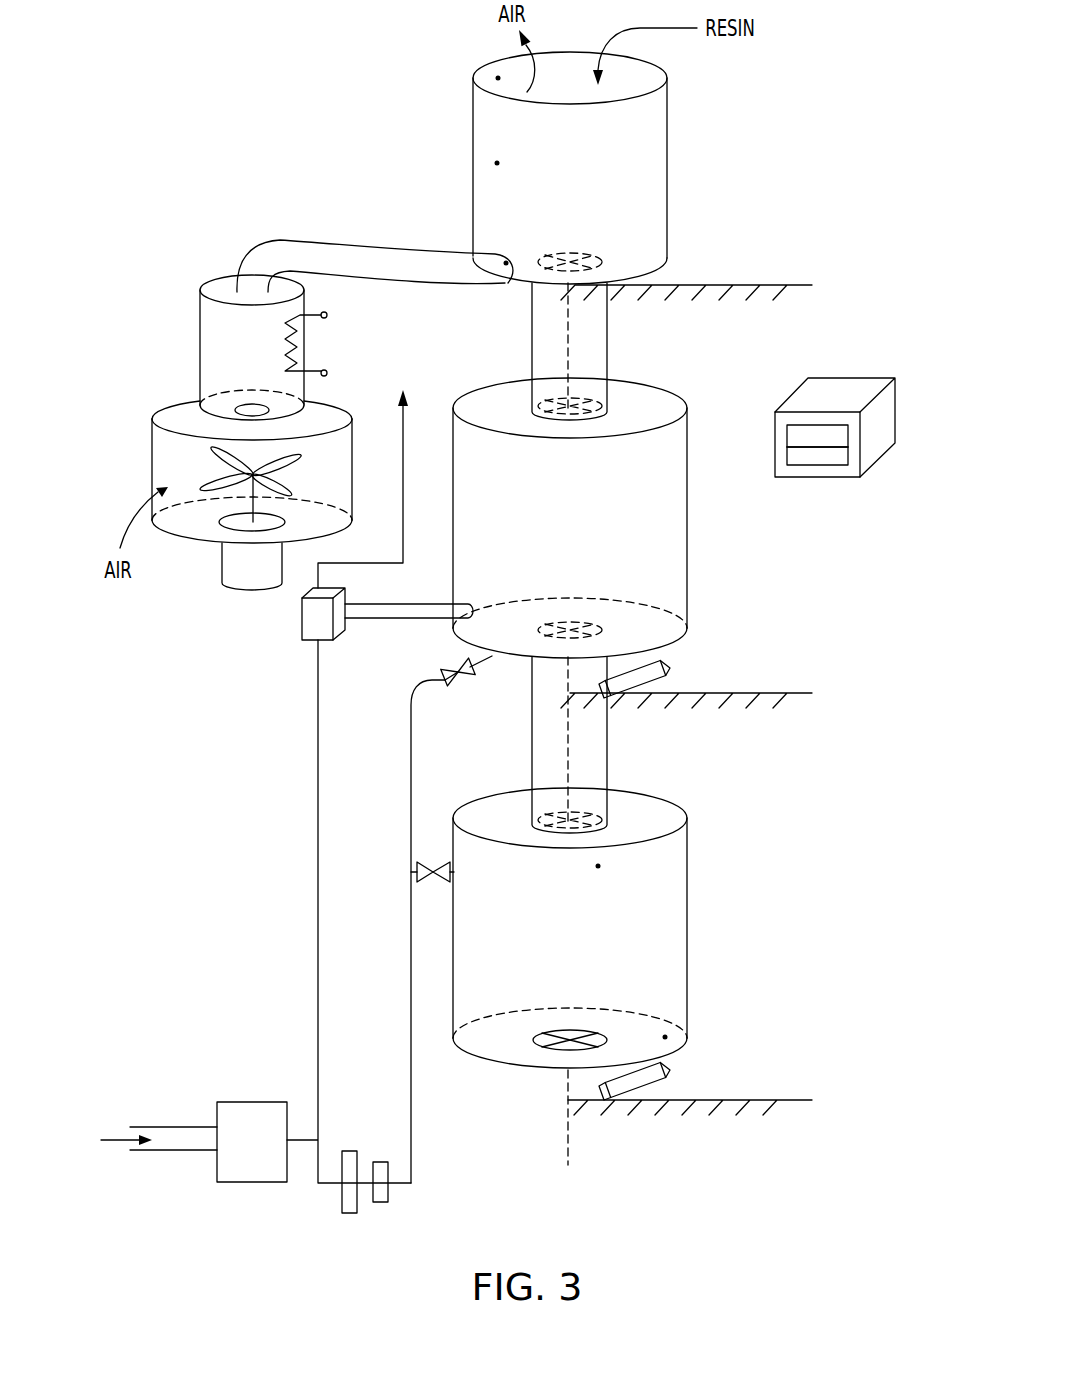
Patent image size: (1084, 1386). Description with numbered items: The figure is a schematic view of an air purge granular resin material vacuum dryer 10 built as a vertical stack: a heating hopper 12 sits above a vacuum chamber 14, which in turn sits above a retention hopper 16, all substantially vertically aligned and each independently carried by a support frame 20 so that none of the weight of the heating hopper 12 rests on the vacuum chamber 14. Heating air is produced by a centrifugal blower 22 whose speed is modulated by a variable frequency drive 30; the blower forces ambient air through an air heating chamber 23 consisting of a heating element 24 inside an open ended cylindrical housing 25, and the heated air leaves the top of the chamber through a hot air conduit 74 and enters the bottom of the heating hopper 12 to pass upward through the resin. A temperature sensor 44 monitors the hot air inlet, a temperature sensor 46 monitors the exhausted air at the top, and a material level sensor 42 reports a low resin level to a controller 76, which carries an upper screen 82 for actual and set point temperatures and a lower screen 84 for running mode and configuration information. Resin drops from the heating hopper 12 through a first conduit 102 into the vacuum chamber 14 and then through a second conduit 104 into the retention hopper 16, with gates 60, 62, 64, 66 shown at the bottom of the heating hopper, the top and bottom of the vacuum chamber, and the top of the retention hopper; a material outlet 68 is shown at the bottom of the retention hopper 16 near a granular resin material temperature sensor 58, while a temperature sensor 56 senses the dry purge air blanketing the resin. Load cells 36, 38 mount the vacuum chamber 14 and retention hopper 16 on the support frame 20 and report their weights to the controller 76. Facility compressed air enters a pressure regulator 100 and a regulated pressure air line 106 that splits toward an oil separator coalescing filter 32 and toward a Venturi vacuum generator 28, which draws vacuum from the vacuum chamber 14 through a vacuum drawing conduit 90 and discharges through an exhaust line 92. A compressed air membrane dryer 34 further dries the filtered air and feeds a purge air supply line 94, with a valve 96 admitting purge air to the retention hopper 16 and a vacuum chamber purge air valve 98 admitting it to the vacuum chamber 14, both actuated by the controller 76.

The air purge granular resin material vacuum dryer 10 is at (228, 92).
The heating hopper 12 is at (643, 188).
The vacuum chamber 14 is at (672, 550).
The retention hopper 16 is at (665, 930).
The support frame 20 is at (767, 283).
The centrifugal blower 22 is at (165, 455).
The air heating chamber 23 is at (214, 343).
The heating element 24 is at (300, 350).
The open ended cylindrical housing 25 is at (200, 290).
The Venturi vacuum generator 28 is at (305, 625).
The variable frequency drive 30 is at (230, 573).
The oil separator coalescing filter 32 is at (350, 1213).
The compressed air membrane dryer 34 is at (382, 1202).
The load cell 36 is at (665, 670).
The load cell 38 is at (665, 1078).
The material level sensor 42 is at (497, 163).
The temperature sensor 44 is at (505, 262).
The temperature sensor 46 is at (498, 78).
The temperature sensor 56 is at (598, 866).
The granular resin material temperature sensor 58 is at (665, 1037).
The gate 60 is at (600, 250).
The gate 62 is at (605, 400).
The gate 64 is at (625, 620).
The gate 66 is at (605, 805).
The outlet valve 68 is at (548, 1055).
The hot air conduit 74 is at (268, 250).
The controller 76 is at (838, 455).
The upper screen 82 is at (793, 435).
The lower screen 84 is at (815, 458).
The vacuum drawing conduit 90 is at (352, 627).
The exhaust line 92 is at (390, 620).
The purge air supply line 94 is at (410, 930).
The valve 96 is at (440, 877).
The vacuum chamber purge air valve 98 is at (455, 680).
The pressure regulator 100 is at (252, 1183).
The first conduit 102 is at (612, 352).
The second conduit 104 is at (612, 760).
The regulated pressure air line 106 is at (316, 775).